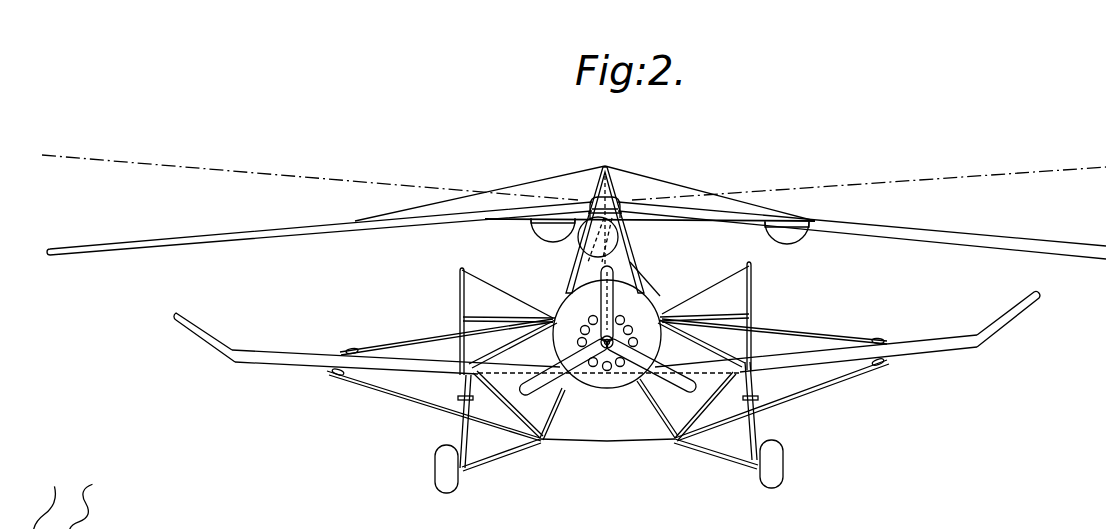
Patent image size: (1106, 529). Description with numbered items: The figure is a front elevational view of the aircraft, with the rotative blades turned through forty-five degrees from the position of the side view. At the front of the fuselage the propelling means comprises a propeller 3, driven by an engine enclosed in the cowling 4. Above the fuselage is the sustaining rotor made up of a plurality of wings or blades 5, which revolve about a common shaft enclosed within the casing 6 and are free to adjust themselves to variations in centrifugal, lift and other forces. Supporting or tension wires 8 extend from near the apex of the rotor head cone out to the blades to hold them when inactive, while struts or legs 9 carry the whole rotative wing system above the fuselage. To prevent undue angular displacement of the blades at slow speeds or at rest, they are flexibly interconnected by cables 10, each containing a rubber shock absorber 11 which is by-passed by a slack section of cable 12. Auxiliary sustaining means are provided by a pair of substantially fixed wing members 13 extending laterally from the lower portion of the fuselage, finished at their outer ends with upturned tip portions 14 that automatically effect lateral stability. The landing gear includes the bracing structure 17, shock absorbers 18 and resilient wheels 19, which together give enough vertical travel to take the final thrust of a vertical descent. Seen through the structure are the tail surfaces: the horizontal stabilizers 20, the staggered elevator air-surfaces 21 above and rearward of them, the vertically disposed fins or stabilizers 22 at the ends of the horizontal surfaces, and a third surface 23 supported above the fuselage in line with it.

The propeller 3 is at (578, 265).
The cowling 4 is at (645, 312).
The wings or blades 5 is at (332, 238).
The casing 6 is at (593, 198).
The supporting or tension wires 8 is at (545, 181).
The struts or legs 9 is at (623, 257).
The cables 10 is at (689, 223).
The rubber shock absorber 11 is at (541, 222).
The slack section of cable 12 is at (543, 236).
The fixed wing members 13 is at (290, 352).
The upturned tip portions 14 is at (208, 330).
The bracing structure 17 is at (506, 456).
The shock absorbers 18 is at (462, 430).
The wheels 19 is at (434, 474).
The stabilizers 20 is at (541, 366).
The air-surfaces 21 is at (499, 317).
The fins or stabilizers 22 is at (459, 303).
The third surface 23 is at (639, 270).